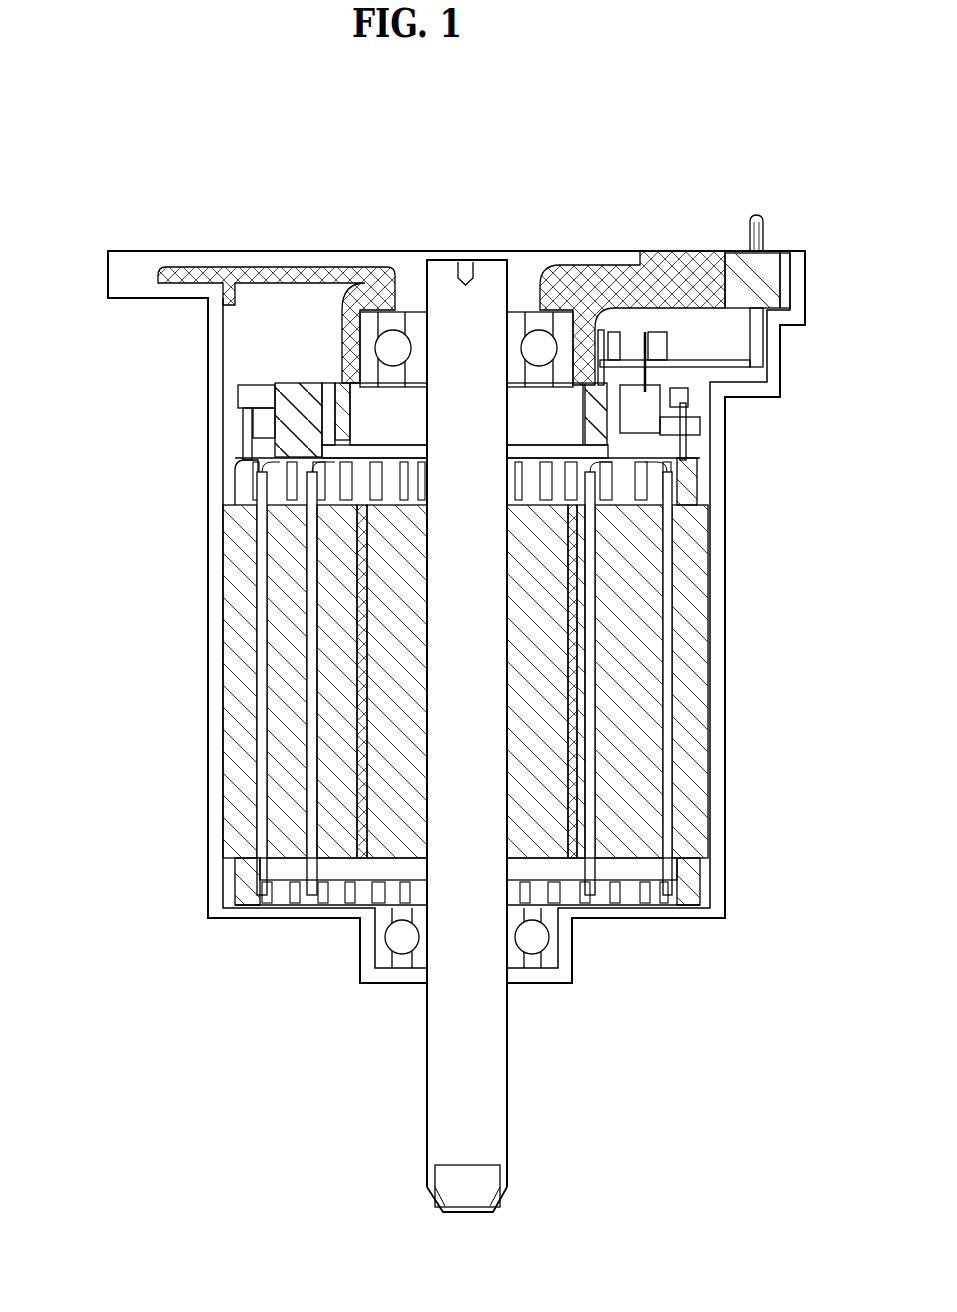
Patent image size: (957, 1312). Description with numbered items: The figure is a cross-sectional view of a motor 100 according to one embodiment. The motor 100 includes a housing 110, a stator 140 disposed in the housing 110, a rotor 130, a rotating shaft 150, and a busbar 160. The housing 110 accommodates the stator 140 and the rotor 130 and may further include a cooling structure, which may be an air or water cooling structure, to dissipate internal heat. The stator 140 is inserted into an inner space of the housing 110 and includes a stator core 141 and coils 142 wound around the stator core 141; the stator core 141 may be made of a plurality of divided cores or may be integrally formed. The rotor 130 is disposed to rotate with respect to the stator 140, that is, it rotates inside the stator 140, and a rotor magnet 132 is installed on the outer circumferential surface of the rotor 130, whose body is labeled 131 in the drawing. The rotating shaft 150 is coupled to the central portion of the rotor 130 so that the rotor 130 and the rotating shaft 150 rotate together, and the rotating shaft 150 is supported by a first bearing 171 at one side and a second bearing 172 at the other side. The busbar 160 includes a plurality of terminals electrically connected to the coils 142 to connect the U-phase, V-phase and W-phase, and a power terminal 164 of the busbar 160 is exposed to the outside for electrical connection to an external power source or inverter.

The motor 100 is at (83, 115).
The housing 110 is at (715, 876).
The rotor 130 is at (329, 681).
The rotor core 131 is at (395, 632).
The rotor magnet 132 is at (352, 697).
The stator 140 is at (540, 678).
The stator core 141 is at (640, 545).
The coils 142 is at (660, 488).
The rotating shaft 150 is at (450, 1060).
The busbar 160 is at (690, 452).
The power terminal 164 is at (788, 268).
The first bearing 171 is at (418, 310).
The second bearing 172 is at (385, 956).